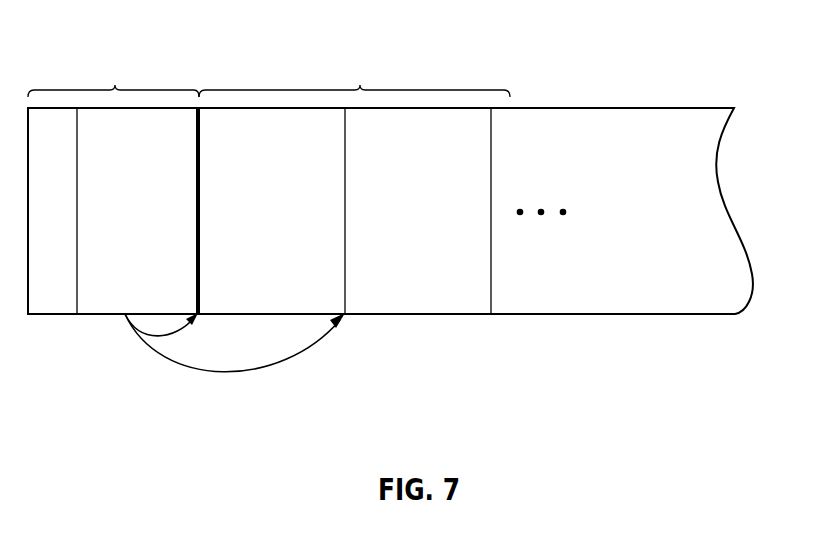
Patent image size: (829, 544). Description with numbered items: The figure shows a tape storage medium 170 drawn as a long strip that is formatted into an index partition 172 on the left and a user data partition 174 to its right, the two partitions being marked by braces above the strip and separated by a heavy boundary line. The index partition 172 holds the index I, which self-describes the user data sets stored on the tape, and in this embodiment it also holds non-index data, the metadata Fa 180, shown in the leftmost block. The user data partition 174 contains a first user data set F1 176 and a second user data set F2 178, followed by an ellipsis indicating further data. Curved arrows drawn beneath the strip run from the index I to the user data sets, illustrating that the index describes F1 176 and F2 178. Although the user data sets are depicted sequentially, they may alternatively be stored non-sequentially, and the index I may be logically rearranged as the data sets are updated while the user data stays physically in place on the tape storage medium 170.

The tape storage medium 170 is at (562, 134).
The index partition 172 is at (115, 85).
The user data partition 174 is at (360, 85).
The user data set F1 176 is at (285, 314).
The user data set F2 178 is at (404, 314).
The non-index data Fa 180 is at (38, 315).